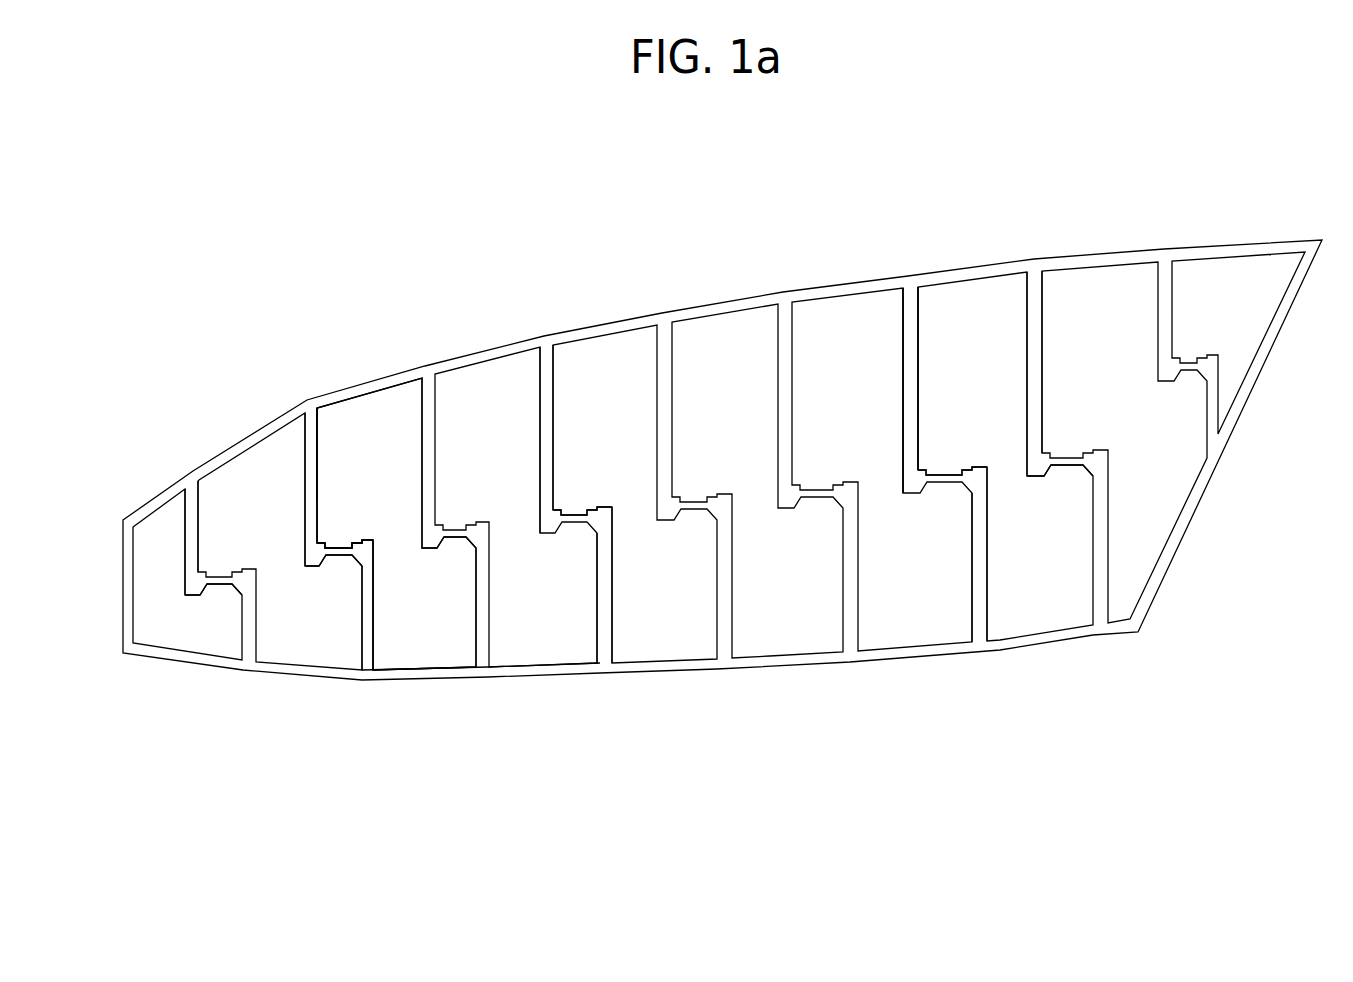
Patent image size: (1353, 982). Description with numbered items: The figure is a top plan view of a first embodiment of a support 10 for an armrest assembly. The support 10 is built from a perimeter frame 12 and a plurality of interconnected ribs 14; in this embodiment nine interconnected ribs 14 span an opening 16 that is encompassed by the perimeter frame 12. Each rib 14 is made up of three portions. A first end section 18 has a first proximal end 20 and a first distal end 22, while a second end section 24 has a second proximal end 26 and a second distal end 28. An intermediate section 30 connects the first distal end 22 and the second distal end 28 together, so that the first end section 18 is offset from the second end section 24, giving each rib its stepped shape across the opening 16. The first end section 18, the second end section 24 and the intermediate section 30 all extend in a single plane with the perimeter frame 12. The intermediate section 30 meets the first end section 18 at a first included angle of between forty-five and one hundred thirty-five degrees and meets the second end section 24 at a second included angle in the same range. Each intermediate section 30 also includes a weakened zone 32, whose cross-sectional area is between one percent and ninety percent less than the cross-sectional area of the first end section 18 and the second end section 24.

The support 10 is at (598, 212).
The perimeter frame 12 is at (1263, 368).
The interconnected ribs 14 is at (170, 588).
The opening 16 is at (542, 600).
The first end section 18 is at (365, 627).
The first proximal end 20 is at (375, 667).
The first distal end 22 is at (378, 547).
The second end section 24 is at (304, 477).
The second proximal end 26 is at (317, 430).
The second distal end 28 is at (304, 553).
The intermediate section 30 is at (334, 566).
The weakened zone 32 is at (338, 547).